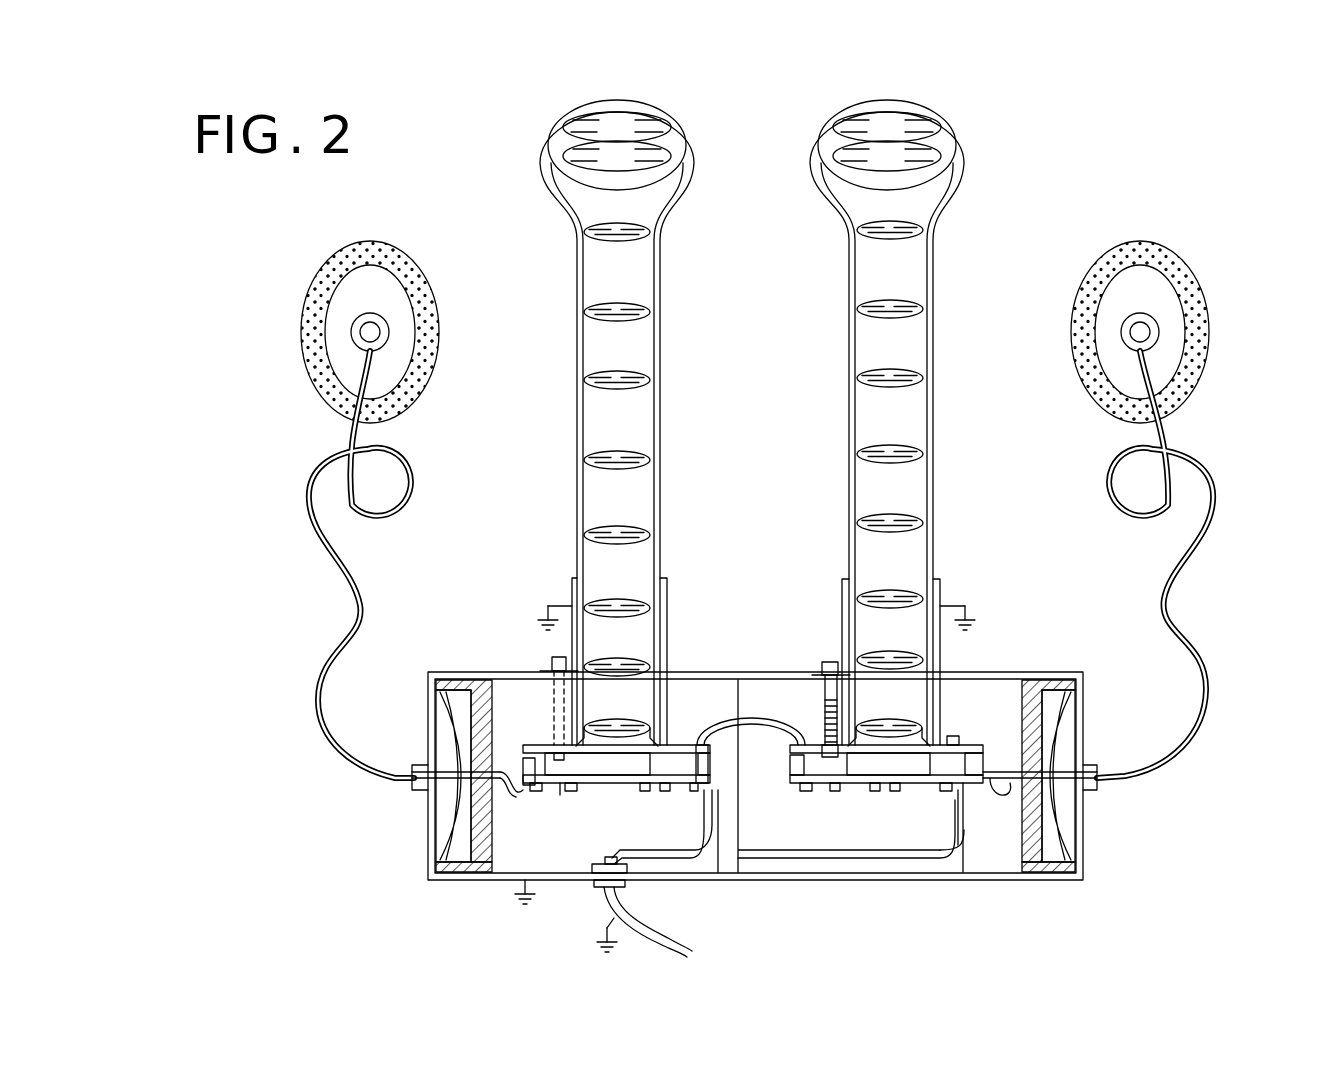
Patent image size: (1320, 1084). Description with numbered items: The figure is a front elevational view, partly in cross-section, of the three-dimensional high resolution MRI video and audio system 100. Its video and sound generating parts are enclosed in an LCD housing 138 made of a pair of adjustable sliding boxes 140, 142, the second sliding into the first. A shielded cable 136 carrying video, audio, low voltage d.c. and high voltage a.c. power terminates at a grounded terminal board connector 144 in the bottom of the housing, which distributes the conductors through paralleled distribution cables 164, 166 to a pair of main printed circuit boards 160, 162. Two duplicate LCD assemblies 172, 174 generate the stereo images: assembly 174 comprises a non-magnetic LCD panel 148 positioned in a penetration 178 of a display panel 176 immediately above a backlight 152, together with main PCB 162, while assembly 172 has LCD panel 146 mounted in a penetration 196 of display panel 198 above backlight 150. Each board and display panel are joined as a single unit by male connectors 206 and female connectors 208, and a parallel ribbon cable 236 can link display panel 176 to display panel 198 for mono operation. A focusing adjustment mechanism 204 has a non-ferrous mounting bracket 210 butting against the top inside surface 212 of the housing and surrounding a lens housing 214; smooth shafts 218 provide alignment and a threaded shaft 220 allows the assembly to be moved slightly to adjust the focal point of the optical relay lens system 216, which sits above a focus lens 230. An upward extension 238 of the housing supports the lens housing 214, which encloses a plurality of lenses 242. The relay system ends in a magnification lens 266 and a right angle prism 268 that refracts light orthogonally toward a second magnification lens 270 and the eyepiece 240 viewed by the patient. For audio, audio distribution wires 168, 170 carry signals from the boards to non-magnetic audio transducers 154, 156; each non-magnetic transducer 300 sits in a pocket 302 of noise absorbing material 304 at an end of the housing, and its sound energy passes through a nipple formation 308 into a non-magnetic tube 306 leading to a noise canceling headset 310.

The MRI video and audio system 100 is at (1088, 150).
The shielded cable 136 is at (680, 940).
The LCD housing 138 is at (428, 615).
The adjustable sliding box 140 is at (428, 672).
The adjustable sliding box 142 is at (1076, 679).
The terminal board connector 144 is at (600, 888).
The non-magnetic LCD panel 146 is at (612, 770).
The non-magnetic LCD panel 148 is at (845, 783).
The backlight 150 is at (645, 791).
The backlight 152 is at (944, 791).
The non-magnetic audio transducer 154 is at (440, 830).
The non-magnetic audio transducer 156 is at (1072, 842).
The main printed circuit board 160 is at (562, 796).
The main printed circuit board 162 is at (876, 791).
The distribution cable 164 is at (738, 800).
The distribution cable 166 is at (788, 858).
The audio distribution wire 168 is at (495, 800).
The audio distribution wire 170 is at (963, 860).
The LCD assembly 172 is at (760, 740).
The LCD assembly 174 is at (790, 745).
The display panel 176 is at (955, 736).
The penetration 178 is at (834, 791).
The penetration 196 is at (704, 800).
The display panel 198 is at (722, 745).
The focusing adjustment mechanism 204 is at (710, 770).
The male connectors 206 is at (523, 760).
The female connectors 208 is at (790, 768).
The non-ferrous mounting bracket 210 is at (545, 705).
The top inside surface 212 is at (812, 745).
The lens housing 214 is at (660, 318).
The optical relay lens system 216 is at (820, 455).
The non-threaded shaft 218 is at (718, 865).
The threaded shaft 220 is at (553, 740).
The focus lens 230 is at (620, 718).
The parallel ribbon cable 236 is at (757, 712).
The upward extension 238 is at (555, 612).
The eyepiece 240 is at (815, 108).
The lenses 242 is at (605, 305).
The magnification lens 266 is at (605, 226).
The right angle prism 268 is at (657, 160).
The second magnification lens 270 is at (592, 135).
The non-magnetic transducer 300 is at (458, 732).
The pocket 302 is at (440, 866).
The noise absorbing material 304 is at (436, 684).
The non-magnetic tube 306 is at (338, 600).
The nipple formation 308 is at (412, 790).
The noise canceling headset 310 is at (305, 345).